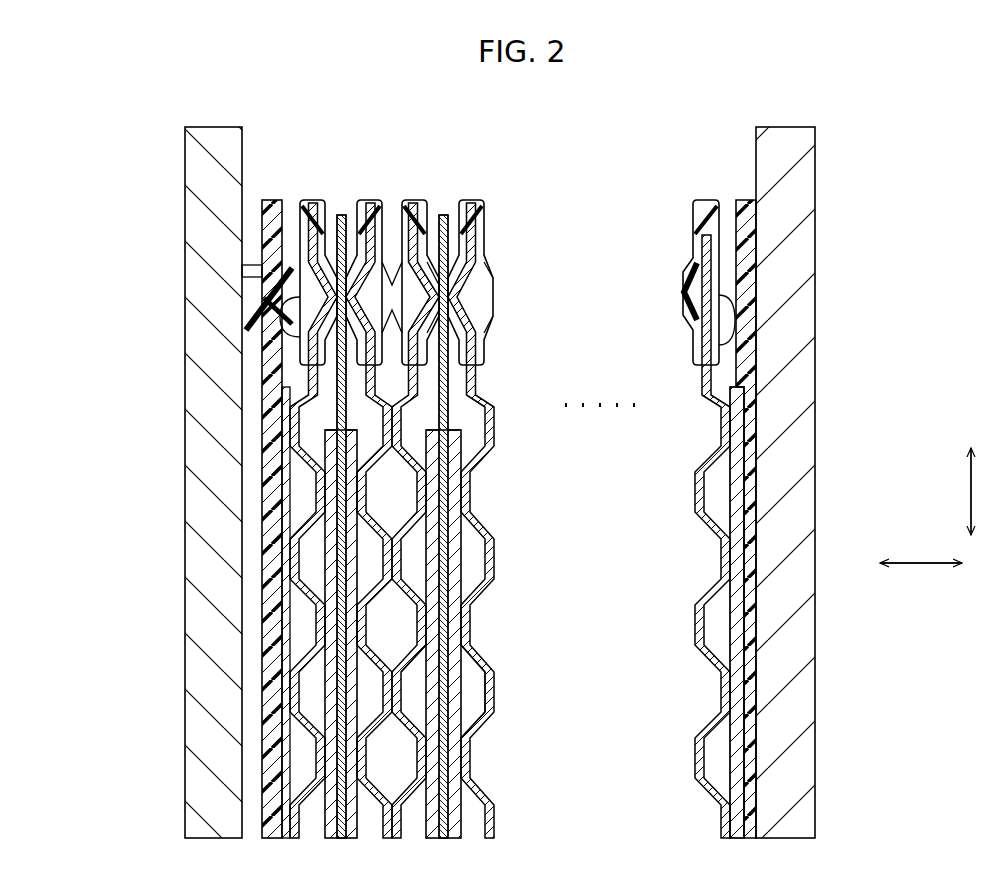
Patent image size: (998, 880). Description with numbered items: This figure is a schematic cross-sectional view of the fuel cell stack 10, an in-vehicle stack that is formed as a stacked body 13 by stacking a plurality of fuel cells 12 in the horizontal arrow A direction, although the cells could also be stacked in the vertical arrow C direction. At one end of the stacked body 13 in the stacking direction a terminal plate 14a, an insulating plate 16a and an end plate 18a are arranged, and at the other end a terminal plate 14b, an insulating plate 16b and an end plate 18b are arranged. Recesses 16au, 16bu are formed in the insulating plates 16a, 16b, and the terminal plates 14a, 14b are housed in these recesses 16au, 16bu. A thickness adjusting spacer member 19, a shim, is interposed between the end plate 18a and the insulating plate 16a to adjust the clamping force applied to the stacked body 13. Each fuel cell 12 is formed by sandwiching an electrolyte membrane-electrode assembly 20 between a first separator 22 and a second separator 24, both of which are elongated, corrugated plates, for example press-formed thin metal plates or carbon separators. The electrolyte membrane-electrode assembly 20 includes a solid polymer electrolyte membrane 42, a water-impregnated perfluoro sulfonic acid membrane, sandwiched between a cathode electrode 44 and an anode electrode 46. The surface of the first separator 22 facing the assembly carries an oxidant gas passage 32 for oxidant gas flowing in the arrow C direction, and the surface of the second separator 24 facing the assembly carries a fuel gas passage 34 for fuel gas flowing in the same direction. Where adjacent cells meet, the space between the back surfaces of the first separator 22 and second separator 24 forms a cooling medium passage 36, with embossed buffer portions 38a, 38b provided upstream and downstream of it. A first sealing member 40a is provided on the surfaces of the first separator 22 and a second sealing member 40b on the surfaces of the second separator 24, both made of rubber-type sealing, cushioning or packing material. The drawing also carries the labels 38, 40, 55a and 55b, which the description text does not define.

The fuel cell stack 10 is at (582, 107).
The fuel cell 12 is at (330, 186).
The stacked body 13 is at (614, 164).
The terminal plate 14a is at (275, 798).
The terminal plate 14b is at (750, 796).
The insulating plate 16a is at (287, 765).
The insulating plate 16b is at (737, 760).
The recess 16au is at (297, 492).
The recess 16bu is at (735, 500).
The end plate 18a is at (192, 730).
The end plate 18b is at (800, 727).
The thickness adjusting spacer member 19 is at (297, 593).
The electrolyte membrane-electrode assembly 20 is at (546, 680).
The first separator 22 is at (497, 798).
The second separator 24 is at (298, 594).
The oxidant gas passage 32 is at (470, 580).
The fuel gas passage 34 is at (398, 545).
The cooling medium passage 36 is at (400, 470).
The seal member 38 is at (470, 198).
The buffer portion 38a is at (458, 276).
The buffer portion 38b is at (472, 306).
The seal member 40 is at (298, 198).
The first sealing member 40a is at (441, 275).
The second sealing member 40b is at (392, 292).
The solid polymer electrolyte membrane 42 is at (435, 692).
The cathode electrode 44 is at (452, 668).
The anode electrode 46 is at (457, 706).
The seal bead 55a is at (283, 335).
The seal bead 55b is at (722, 340).